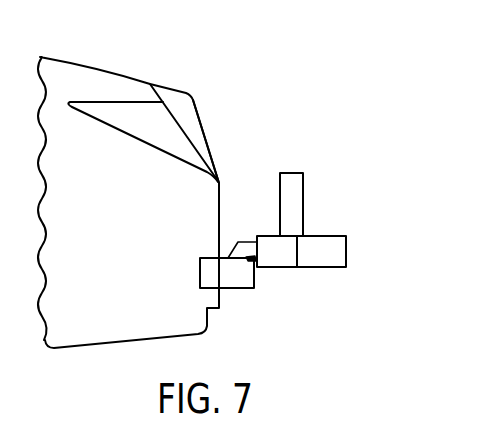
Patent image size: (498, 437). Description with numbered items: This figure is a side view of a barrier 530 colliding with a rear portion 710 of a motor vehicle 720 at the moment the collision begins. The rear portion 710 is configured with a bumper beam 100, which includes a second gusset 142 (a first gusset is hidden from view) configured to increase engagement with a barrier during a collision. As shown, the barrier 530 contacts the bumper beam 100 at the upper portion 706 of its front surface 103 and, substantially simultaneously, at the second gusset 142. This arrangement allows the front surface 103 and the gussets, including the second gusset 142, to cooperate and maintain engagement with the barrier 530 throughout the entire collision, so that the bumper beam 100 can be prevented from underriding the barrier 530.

The bumper beam 100 is at (260, 310).
The front surface 103 is at (255, 277).
The second gusset 142 is at (246, 230).
The barrier 530 is at (326, 223).
The upper portion 706 is at (255, 262).
The rear portion 710 is at (236, 146).
The motor vehicle 720 is at (166, 75).